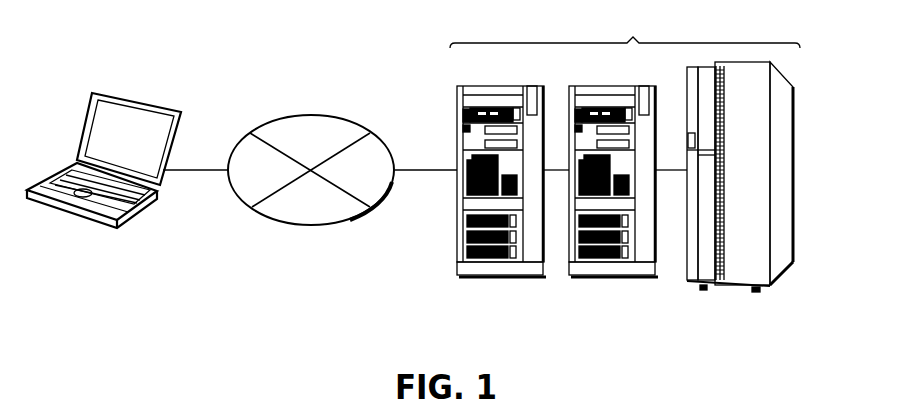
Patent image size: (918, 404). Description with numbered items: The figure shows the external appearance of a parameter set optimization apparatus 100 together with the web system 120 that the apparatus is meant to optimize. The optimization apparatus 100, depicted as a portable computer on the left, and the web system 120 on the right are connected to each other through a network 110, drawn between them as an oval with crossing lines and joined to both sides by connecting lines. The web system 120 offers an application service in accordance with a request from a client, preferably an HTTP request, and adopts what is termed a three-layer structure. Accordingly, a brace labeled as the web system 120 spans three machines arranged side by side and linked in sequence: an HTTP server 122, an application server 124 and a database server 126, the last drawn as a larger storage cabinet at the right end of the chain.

The parameter set optimization apparatus 100 is at (100, 224).
The network 110 is at (293, 225).
The web system 120 is at (625, 30).
The HTTP server 122 is at (502, 278).
The application server 124 is at (613, 278).
The database server 126 is at (716, 291).